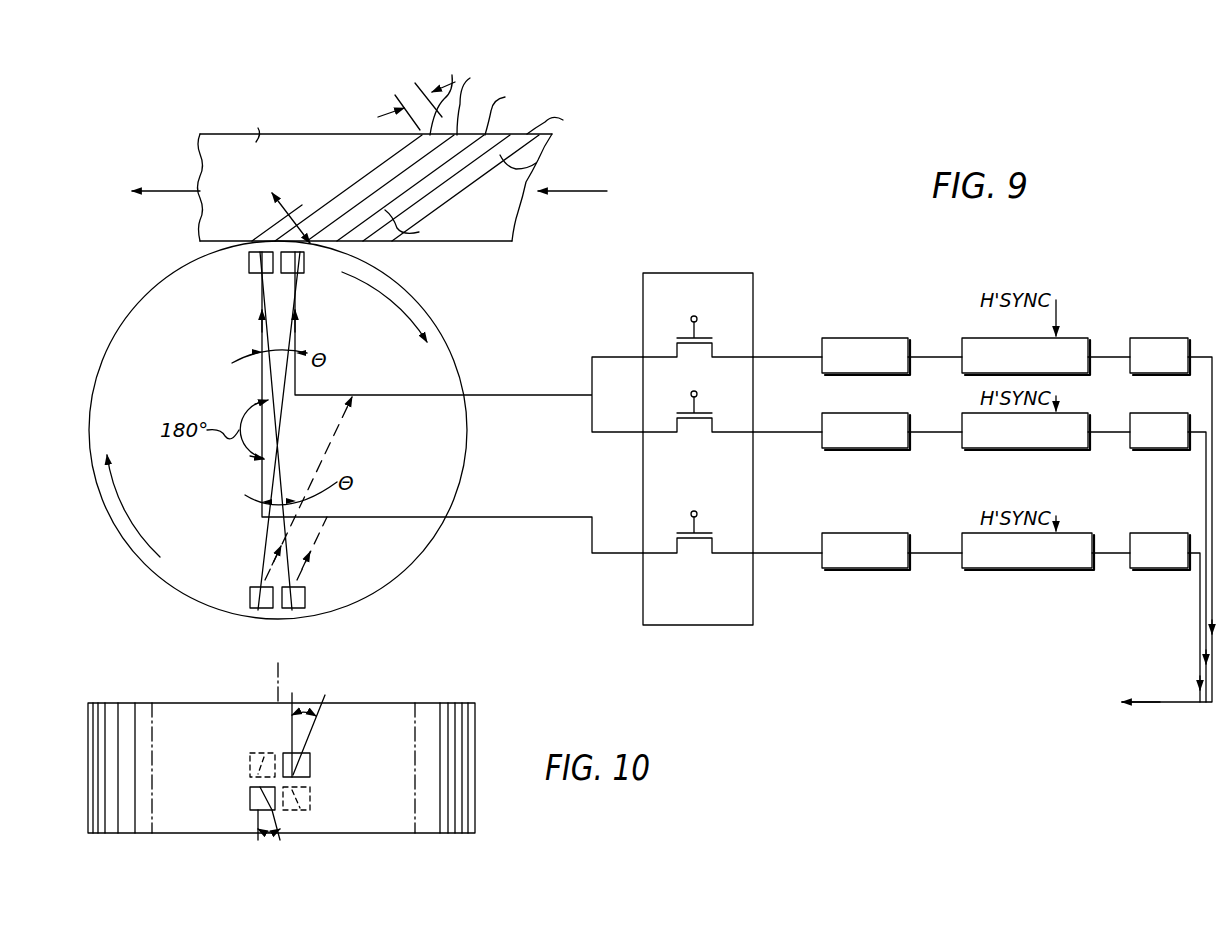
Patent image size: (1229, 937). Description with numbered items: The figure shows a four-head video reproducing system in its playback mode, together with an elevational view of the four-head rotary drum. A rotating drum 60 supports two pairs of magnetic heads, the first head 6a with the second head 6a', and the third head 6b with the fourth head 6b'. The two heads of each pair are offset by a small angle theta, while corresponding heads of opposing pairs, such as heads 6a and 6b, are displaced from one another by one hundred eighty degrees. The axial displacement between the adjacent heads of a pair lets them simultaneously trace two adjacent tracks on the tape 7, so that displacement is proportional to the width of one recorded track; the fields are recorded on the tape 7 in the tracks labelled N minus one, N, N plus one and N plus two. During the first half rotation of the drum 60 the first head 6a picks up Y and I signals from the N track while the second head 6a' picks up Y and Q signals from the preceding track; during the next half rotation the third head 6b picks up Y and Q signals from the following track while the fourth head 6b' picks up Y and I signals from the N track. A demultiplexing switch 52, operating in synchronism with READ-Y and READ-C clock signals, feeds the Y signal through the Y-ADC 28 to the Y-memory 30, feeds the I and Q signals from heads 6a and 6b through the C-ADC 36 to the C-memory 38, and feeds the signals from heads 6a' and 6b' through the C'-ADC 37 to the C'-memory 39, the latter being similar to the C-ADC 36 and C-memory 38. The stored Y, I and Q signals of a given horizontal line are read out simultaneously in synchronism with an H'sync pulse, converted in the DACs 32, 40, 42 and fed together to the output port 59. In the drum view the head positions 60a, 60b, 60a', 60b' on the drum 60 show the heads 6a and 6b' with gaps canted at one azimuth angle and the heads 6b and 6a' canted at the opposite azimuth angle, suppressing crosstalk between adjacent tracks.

In FIG. 9, the tape 7 is at (486, 240).
In FIG. 9, the rotating drum 60 is at (435, 537).
In FIG. 10, the rotating drum 60 is at (475, 726).
In FIG. 9, the first head 6a is at (312, 282).
In FIG. 10, the first head 6a is at (327, 723).
In FIG. 9, the second head 6a' is at (228, 282).
In FIG. 10, the second head 6a' is at (244, 813).
In FIG. 9, the third head 6b is at (235, 578).
In FIG. 10, the third head 6b is at (230, 750).
In FIG. 9, the fourth head 6b' is at (323, 578).
In FIG. 10, the fourth head 6b' is at (333, 808).
In FIG. 9, the demultiplexing switch 52 is at (753, 290).
In FIG. 9, the Y-ADC 28 is at (850, 337).
In FIG. 9, the Y-memory 30 is at (969, 338).
In FIG. 9, the DAC 32 is at (1145, 338).
In FIG. 9, the C-ADC 36 is at (858, 448).
In FIG. 9, the C-memory 38 is at (966, 448).
In FIG. 9, the DAC 40 is at (1150, 448).
In FIG. 9, the C'-ADC 37 is at (840, 568).
In FIG. 9, the C'-memory 39 is at (985, 568).
In FIG. 9, the DAC 42 is at (1145, 568).
In FIG. 9, the output port 59 is at (1194, 712).
In FIG. 10, the head mounting position a 60a is at (351, 760).
In FIG. 10, the head mounting position b 60b is at (206, 760).
In FIG. 10, the head mounting position a' 60a' is at (206, 790).
In FIG. 10, the head mounting position b' 60b' is at (348, 790).